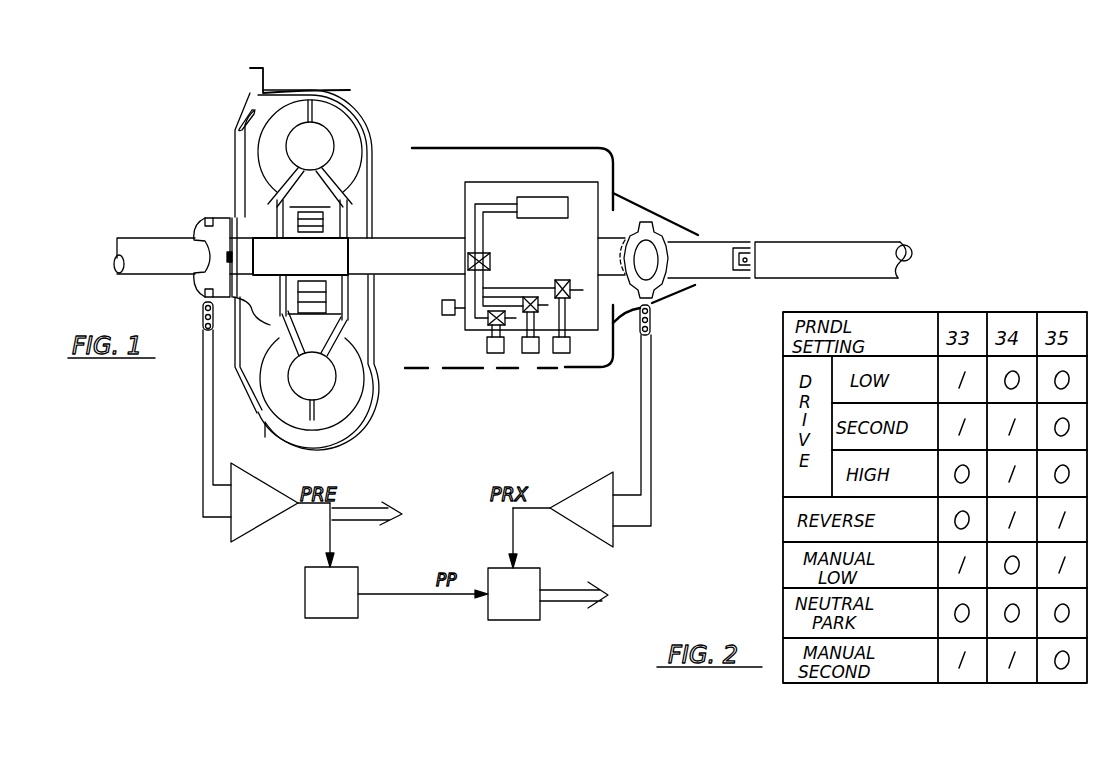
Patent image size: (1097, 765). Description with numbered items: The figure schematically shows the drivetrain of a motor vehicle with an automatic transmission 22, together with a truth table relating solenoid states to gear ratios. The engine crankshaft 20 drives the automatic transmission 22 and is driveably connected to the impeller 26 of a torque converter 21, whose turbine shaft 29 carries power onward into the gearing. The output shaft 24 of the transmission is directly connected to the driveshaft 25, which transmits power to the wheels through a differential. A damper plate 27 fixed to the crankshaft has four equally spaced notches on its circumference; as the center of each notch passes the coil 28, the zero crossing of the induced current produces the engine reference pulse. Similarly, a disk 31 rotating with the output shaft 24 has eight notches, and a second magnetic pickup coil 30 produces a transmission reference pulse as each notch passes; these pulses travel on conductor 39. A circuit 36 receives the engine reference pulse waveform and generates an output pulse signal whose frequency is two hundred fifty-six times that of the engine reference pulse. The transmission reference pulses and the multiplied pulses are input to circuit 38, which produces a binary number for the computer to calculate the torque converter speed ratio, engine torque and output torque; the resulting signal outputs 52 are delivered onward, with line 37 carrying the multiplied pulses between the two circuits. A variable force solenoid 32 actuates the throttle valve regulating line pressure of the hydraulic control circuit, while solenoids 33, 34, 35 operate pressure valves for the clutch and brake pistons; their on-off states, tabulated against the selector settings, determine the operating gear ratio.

The engine crankshaft 20 is at (128, 237).
The torque converter 21 is at (321, 78).
The automatic transmission 22 is at (567, 182).
The output shaft 24 is at (727, 243).
The driveshaft 25 is at (858, 242).
The impeller 26 is at (363, 122).
The damper plate 27 is at (212, 222).
The coil 28 is at (213, 323).
The turbine shaft 29 is at (388, 236).
The coil 30 is at (655, 337).
The disk 31 is at (652, 228).
The variable force solenoid 32 is at (448, 300).
The solenoid 33 is at (487, 341).
The solenoid 34 is at (530, 353).
The solenoid 35 is at (570, 340).
The circuit 36 is at (310, 600).
The signal line 37 is at (400, 597).
The circuit 38 is at (490, 616).
The conductor 39 is at (515, 528).
The output signal 52 is at (370, 507).